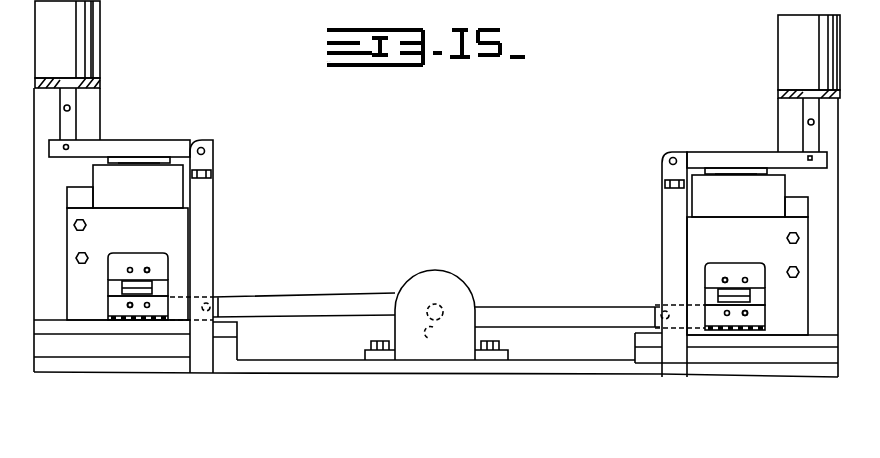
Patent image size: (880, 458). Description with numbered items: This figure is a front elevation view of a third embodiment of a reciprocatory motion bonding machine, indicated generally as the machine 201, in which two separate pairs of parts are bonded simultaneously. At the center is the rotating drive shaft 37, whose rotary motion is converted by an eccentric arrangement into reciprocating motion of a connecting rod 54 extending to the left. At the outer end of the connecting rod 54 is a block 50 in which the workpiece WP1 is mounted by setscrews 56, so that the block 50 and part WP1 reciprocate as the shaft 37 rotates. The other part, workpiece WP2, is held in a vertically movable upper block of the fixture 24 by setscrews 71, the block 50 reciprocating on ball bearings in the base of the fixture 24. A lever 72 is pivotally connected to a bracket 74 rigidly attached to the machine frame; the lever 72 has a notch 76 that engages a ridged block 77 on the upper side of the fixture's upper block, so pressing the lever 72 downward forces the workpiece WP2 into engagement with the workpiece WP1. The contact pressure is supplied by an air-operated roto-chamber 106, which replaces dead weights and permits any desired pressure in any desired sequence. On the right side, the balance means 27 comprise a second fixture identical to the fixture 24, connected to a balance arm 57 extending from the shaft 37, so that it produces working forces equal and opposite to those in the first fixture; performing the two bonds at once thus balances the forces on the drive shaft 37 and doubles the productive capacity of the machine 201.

The roto-chamber 106 is at (68, 61).
The lever 72 is at (110, 150).
The notch 76 is at (141, 160).
The ridged block 77 is at (141, 167).
The fixture 24 is at (213, 203).
The bracket 74 is at (207, 231).
The workpiece WP2 is at (146, 240).
The setscrews 71 is at (147, 268).
The workpiece WP1 is at (152, 290).
The block 50 is at (122, 308).
The setscrews 56 is at (128, 304).
The connecting rod 54 is at (301, 298).
The balance arm 57 is at (529, 293).
The shaft 37 is at (435, 315).
The machine 201 is at (450, 226).
The balance means 27 is at (728, 122).